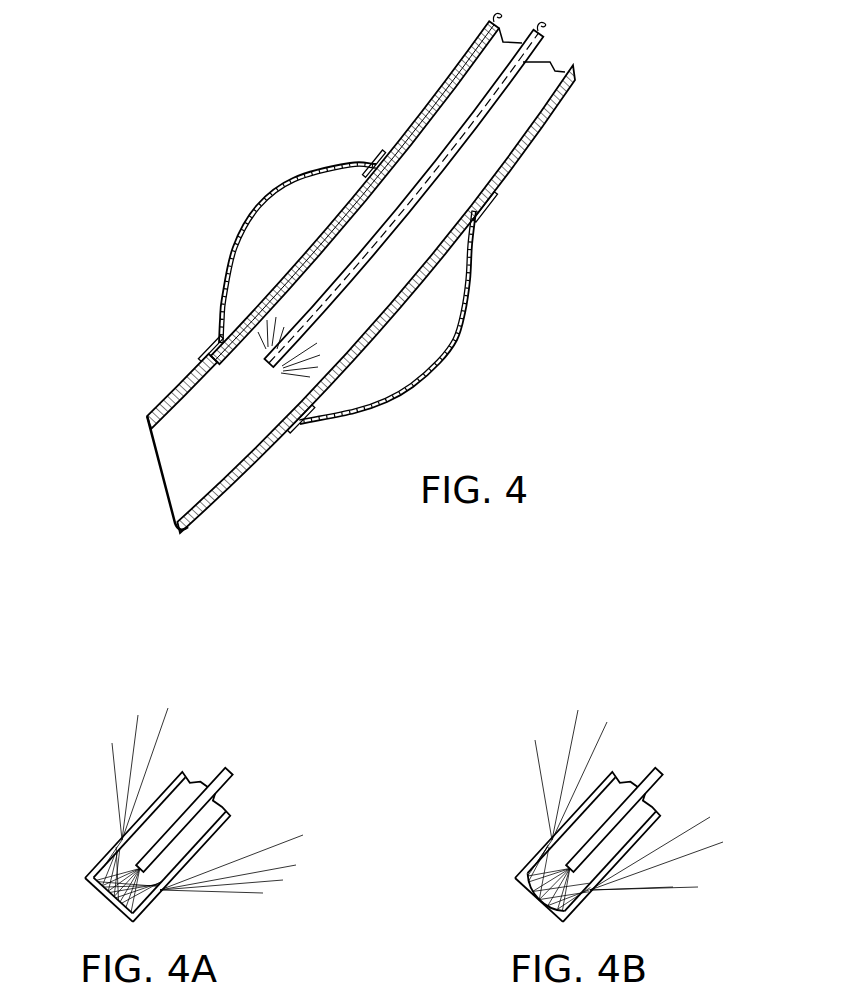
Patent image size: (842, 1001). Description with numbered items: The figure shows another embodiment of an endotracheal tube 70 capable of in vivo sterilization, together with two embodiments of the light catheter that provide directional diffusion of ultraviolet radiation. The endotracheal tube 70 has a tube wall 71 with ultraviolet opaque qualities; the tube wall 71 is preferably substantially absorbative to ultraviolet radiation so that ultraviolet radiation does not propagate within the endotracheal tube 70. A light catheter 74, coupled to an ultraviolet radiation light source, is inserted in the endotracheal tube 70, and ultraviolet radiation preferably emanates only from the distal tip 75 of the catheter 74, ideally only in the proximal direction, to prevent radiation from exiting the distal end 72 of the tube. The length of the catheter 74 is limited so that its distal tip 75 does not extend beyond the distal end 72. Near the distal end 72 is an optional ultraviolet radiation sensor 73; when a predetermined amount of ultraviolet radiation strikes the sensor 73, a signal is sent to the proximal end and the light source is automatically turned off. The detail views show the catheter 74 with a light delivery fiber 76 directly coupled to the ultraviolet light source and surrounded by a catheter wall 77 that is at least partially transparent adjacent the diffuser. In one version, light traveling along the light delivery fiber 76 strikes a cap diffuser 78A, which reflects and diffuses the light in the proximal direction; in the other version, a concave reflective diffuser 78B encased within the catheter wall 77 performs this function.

In FIG. 4, the endotracheal tube 70 is at (207, 202).
In FIG. 4, the tube wall 71 is at (545, 130).
In FIG. 4, the distal end 72 is at (158, 462).
In FIG. 4, the ultraviolet radiation sensor 73 is at (220, 366).
In FIG. 4, the light catheter 74 is at (546, 43).
In FIG. 4, the distal tip 75 is at (271, 367).
In FIG. 4A, the distal tip 75 is at (95, 890).
In FIG. 4B, the distal tip 75 is at (525, 890).
In FIG. 4A, the light delivery fiber 76 is at (213, 788).
In FIG. 4B, the light delivery fiber 76 is at (643, 788).
In FIG. 4A, the catheter wall 77 is at (220, 806).
In FIG. 4B, the catheter wall 77 is at (650, 806).
In FIG. 4A, the cap diffuser 78A is at (97, 870).
In FIG. 4B, the concave reflective diffuser 78B is at (520, 876).